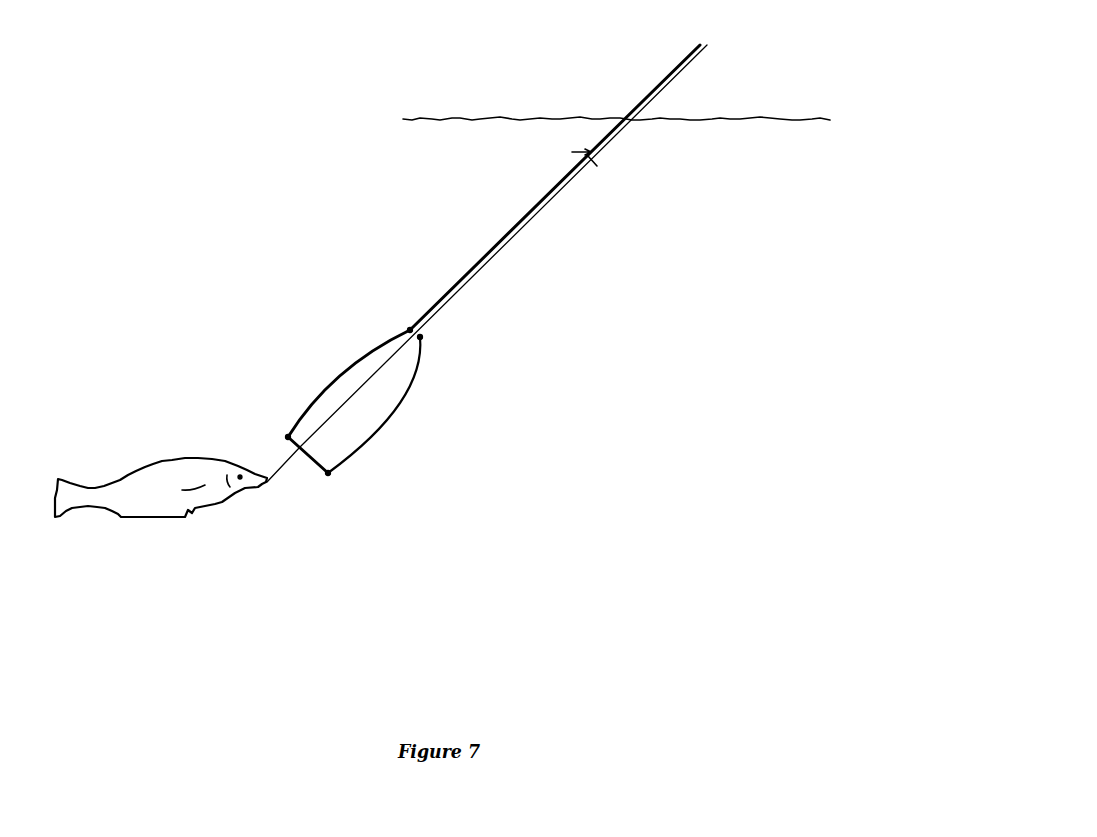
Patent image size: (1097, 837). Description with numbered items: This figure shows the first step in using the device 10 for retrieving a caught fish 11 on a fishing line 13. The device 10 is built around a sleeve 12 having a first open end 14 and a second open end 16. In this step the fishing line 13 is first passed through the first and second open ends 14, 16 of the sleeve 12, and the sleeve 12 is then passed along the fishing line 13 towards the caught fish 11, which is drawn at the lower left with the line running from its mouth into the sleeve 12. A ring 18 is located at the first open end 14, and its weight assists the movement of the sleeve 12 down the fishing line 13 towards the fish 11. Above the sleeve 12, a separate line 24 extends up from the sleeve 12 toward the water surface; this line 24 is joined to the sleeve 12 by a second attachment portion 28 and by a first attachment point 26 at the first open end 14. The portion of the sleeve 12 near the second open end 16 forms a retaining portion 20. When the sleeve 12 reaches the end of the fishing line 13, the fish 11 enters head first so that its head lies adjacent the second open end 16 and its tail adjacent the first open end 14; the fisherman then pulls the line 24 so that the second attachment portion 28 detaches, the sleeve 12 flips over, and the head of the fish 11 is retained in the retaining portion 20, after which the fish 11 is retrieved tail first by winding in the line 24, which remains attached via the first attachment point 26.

The device 10 is at (302, 171).
The caught fish 11 is at (160, 500).
The sleeve 12 is at (370, 395).
The fishing line 13 is at (282, 460).
The first open end 14 is at (311, 514).
The second open end 16 is at (435, 363).
The ring 18 is at (328, 473).
The retaining portion 20 is at (420, 337).
The line 24 is at (502, 237).
The first attachment point 26 is at (287, 433).
The second attachment portion 28 is at (410, 330).